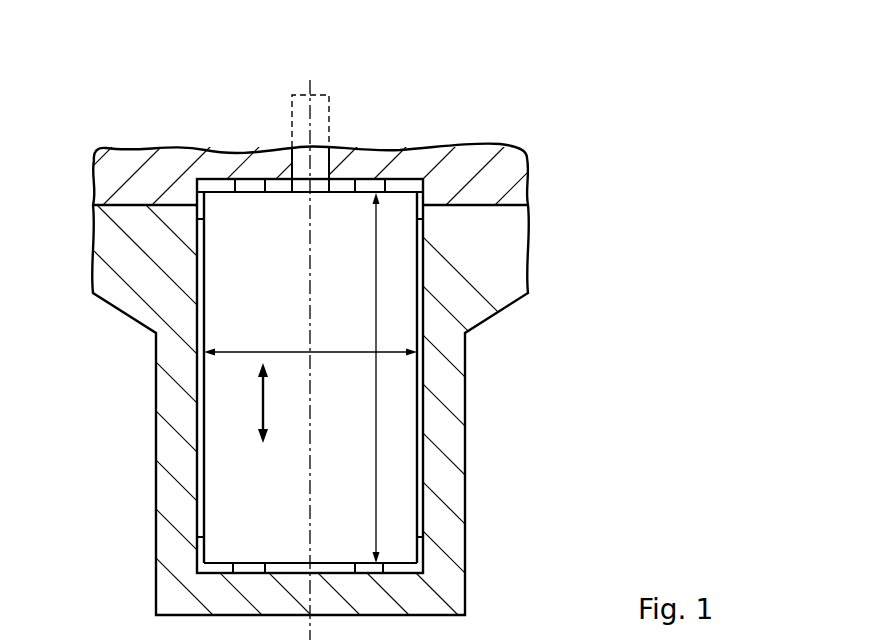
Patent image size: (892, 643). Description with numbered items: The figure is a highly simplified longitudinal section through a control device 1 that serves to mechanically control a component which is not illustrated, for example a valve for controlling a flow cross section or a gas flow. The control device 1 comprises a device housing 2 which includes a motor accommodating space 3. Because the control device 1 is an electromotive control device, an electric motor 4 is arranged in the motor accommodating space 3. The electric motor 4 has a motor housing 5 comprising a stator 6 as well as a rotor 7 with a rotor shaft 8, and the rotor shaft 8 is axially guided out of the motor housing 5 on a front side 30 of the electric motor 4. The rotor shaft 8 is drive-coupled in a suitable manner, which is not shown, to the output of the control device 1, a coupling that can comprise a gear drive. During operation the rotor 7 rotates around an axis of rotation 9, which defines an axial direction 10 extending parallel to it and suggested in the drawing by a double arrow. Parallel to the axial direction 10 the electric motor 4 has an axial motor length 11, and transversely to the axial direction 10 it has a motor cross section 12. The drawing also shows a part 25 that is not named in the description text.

The control device 1 is at (331, 321).
The device housing 2 is at (325, 321).
The motor accommodating space 3 is at (420, 463).
The electric motor 4 is at (352, 330).
The motor housing 5 is at (222, 443).
The stator 6 is at (222, 483).
The rotor 7 is at (282, 523).
The rotor shaft 8 is at (323, 160).
The axis of rotation 9 is at (310, 260).
The axial direction 10 is at (262, 403).
The axial motor length 11 is at (376, 378).
The motor cross section 12 is at (337, 352).
The cover plate 25 is at (132, 158).
The front side 30 is at (220, 187).